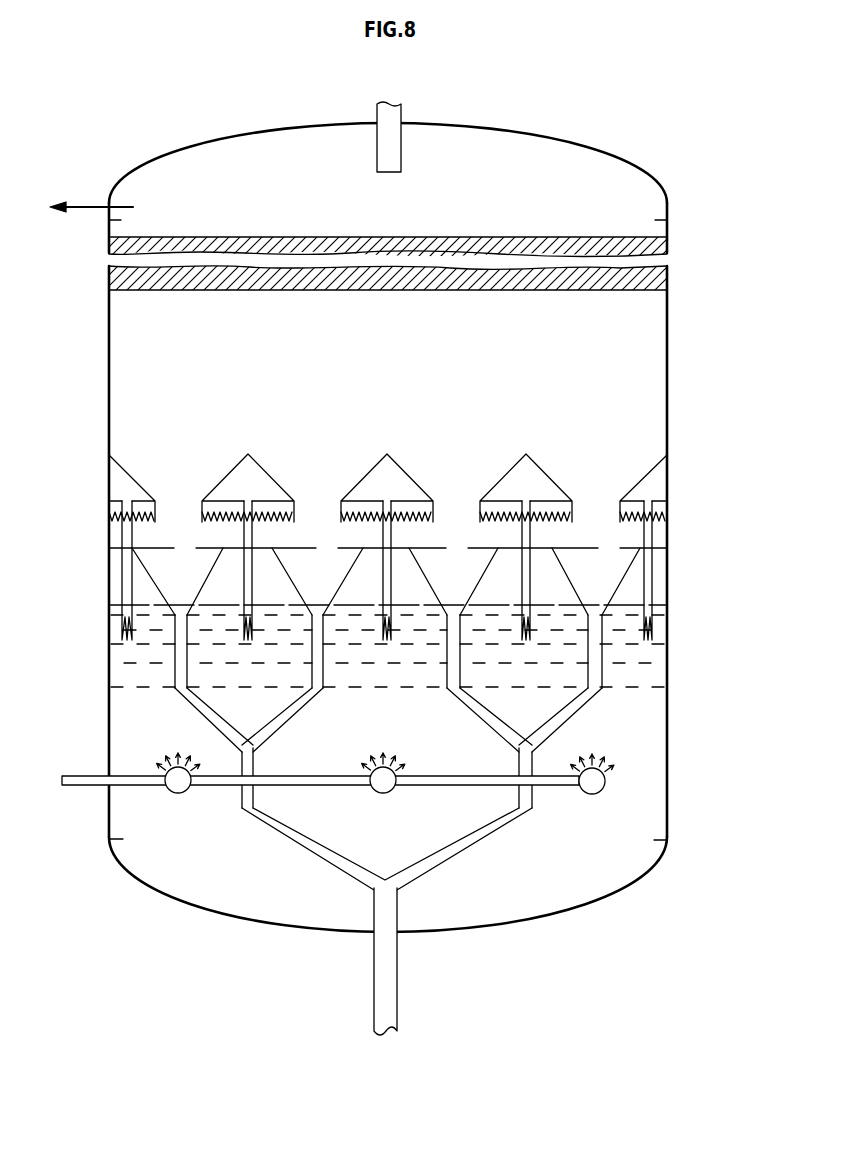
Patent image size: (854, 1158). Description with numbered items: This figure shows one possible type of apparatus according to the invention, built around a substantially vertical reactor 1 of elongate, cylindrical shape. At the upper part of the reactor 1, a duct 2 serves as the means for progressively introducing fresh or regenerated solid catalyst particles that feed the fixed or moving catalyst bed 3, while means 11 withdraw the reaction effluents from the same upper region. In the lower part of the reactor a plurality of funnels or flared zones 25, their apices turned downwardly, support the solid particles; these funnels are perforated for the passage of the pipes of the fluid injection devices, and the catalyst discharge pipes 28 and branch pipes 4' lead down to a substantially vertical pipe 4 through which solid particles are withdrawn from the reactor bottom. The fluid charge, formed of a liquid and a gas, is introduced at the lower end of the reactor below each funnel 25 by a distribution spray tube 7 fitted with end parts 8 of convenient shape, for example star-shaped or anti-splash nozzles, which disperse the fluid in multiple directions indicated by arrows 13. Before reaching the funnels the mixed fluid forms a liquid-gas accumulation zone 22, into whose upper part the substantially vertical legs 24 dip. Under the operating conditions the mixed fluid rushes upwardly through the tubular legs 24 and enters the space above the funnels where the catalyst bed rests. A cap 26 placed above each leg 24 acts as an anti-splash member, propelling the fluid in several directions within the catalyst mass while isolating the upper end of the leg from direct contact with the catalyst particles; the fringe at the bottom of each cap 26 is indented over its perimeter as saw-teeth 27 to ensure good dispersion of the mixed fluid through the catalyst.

The reactor 1 is at (188, 148).
The duct for introducing solid particles 2 is at (377, 112).
The catalyst bed 3 is at (109, 278).
The vertical pipe for withdrawing solid particles 4 is at (364, 961).
The branch pipes 4' is at (388, 711).
The distribution spray tube 7 is at (90, 786).
The end part 8 is at (180, 794).
The means for withdrawing reaction effluents 11 is at (80, 206).
The arrows indicating fluid dispersion 13 is at (606, 760).
The liquid-gas accumulation zone 22 is at (122, 646).
The leg 24 is at (124, 541).
The funnel 25 is at (480, 580).
The cap 26 is at (112, 473).
The saw-teeth 27 is at (110, 516).
The catalyst discharge pipe 28 is at (470, 707).